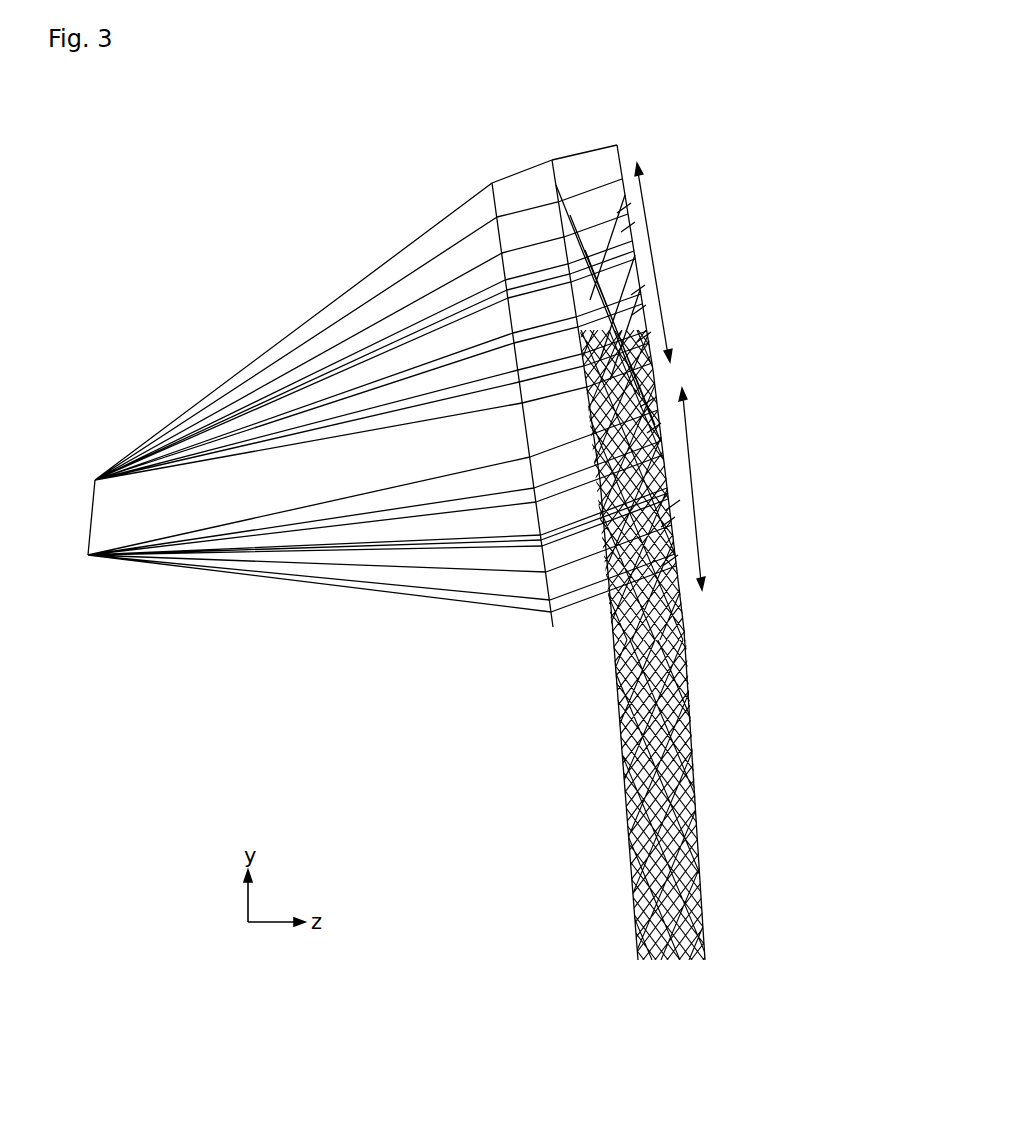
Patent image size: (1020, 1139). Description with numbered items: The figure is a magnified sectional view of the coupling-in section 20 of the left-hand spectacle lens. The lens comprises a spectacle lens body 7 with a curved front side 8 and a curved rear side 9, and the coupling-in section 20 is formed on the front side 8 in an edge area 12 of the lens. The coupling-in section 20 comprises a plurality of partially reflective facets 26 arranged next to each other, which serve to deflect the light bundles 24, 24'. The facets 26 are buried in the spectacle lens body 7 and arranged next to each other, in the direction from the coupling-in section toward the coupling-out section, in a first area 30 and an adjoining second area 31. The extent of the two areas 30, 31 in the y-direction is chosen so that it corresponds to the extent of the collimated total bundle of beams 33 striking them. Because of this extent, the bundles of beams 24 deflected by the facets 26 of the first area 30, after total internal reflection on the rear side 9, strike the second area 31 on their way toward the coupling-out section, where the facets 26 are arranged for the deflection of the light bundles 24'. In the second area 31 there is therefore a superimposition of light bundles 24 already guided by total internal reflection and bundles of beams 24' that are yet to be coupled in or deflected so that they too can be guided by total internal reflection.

The spectacle lens body 7 is at (655, 912).
The front side 8 is at (687, 670).
The rear side 9 is at (623, 723).
The edge area 12 is at (619, 151).
The coupling-in section 20 is at (664, 376).
The light bundles 24 is at (308, 331).
The light bundles 24' is at (319, 571).
The partially reflective facets 26 is at (623, 208).
The first area 30 is at (653, 257).
The second area 31 is at (688, 470).
The collimated total bundle of beams 33 is at (520, 182).